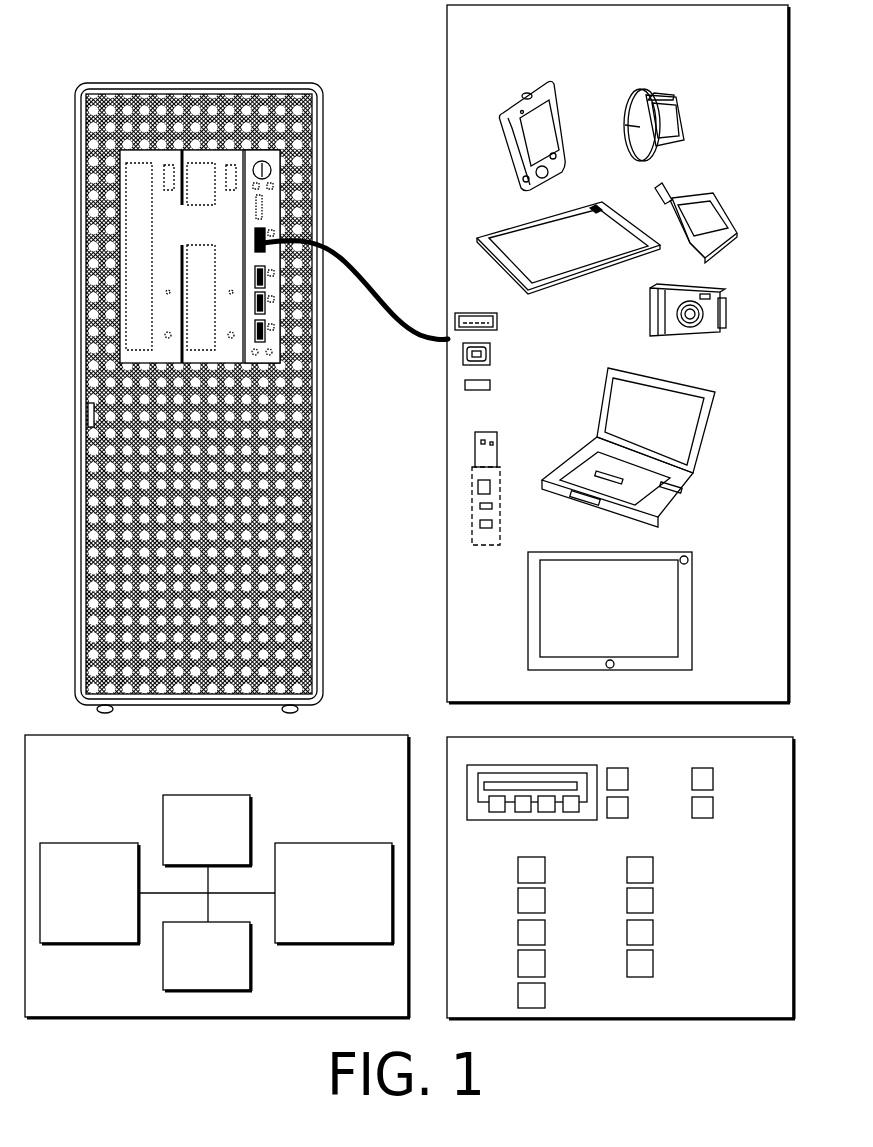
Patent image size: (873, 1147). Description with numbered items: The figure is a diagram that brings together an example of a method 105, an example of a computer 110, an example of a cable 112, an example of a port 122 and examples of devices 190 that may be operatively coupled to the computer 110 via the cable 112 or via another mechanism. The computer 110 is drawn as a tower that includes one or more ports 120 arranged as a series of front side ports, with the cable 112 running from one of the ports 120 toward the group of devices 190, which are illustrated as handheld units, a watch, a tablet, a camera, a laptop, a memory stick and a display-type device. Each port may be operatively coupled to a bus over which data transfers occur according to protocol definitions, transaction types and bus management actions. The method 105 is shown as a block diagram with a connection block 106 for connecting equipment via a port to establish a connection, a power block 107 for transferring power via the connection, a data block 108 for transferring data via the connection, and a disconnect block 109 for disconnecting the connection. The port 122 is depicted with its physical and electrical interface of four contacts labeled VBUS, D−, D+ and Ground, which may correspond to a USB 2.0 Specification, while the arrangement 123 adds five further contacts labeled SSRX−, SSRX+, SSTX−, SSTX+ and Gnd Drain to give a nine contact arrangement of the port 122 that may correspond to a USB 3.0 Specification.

The computer 110 is at (199, 375).
The cable 112 is at (342, 250).
The ports 120 is at (236, 233).
The devices 190 is at (618, 354).
The method 105 is at (217, 876).
The connection block 106 is at (90, 893).
The power block 107 is at (207, 830).
The data block 108 is at (207, 956).
The disconnect block 109 is at (334, 893).
The port 122 is at (504, 765).
The arrangement 123 is at (506, 844).